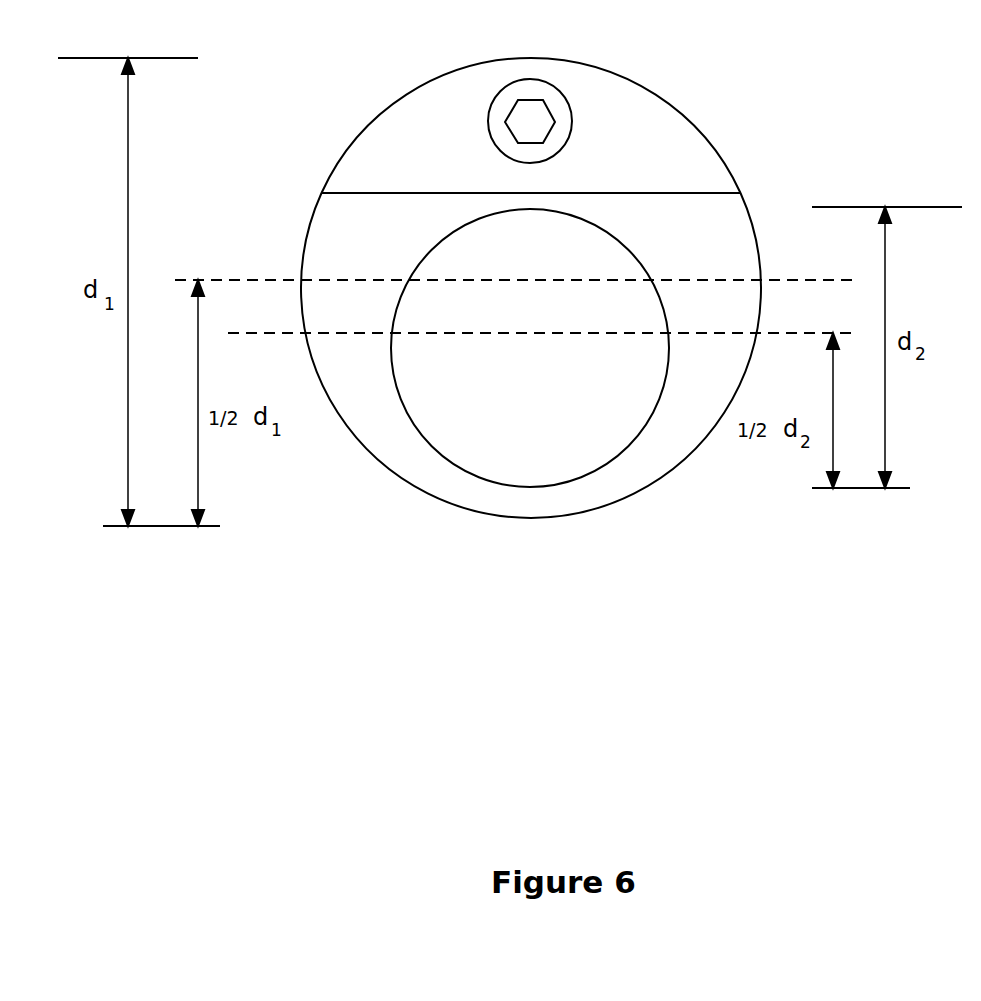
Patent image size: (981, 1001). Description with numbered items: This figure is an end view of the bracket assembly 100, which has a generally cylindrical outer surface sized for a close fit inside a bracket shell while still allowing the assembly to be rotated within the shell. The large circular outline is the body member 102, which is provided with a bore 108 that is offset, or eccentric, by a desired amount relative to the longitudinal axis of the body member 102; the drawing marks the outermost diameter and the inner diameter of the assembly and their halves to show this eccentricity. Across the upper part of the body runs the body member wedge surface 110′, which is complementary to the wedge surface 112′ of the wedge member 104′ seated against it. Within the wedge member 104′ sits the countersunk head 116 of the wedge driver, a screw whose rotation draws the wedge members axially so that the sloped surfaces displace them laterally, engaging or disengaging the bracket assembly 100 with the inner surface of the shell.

The bracket assembly 100 is at (566, 327).
The body member 102 is at (413, 460).
The wedge member 104′ is at (687, 157).
The bore 108 is at (588, 447).
The body member wedge surface 110′ is at (413, 192).
The wedge surface 112′ is at (377, 196).
The head 116 is at (537, 90).